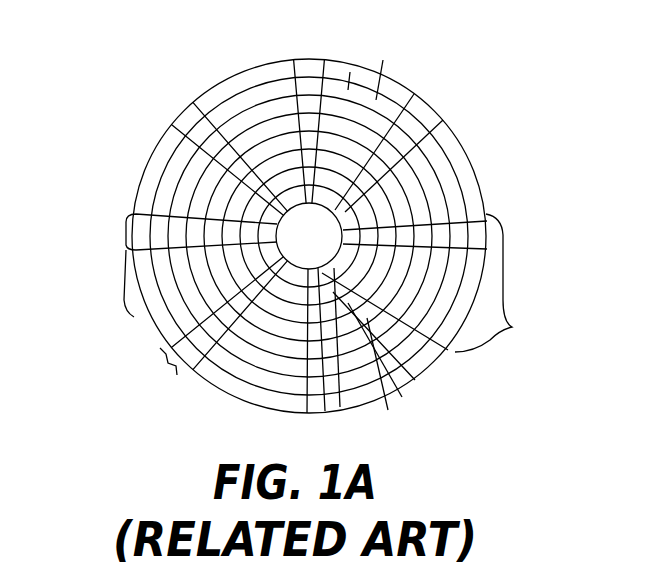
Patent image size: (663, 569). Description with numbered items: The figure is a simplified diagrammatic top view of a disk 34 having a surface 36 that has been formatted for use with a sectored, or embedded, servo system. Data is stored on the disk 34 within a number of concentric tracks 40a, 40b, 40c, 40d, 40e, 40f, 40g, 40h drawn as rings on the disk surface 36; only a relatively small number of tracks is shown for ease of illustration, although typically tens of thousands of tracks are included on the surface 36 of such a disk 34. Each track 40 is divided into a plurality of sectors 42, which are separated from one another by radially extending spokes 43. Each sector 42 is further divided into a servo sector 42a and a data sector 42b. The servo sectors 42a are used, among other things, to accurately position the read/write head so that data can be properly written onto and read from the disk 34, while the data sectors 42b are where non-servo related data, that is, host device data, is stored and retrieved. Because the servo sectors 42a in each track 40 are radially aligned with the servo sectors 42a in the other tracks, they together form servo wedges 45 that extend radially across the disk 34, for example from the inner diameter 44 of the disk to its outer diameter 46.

The disk 34 is at (227, 80).
The surface 36 is at (160, 150).
The track 40 is at (455, 178).
The track 40a is at (350, 72).
The track 40b is at (383, 60).
The track 40c is at (414, 94).
The track 40d is at (443, 120).
The track 40e is at (415, 380).
The track 40f is at (402, 397).
The track 40g is at (388, 410).
The track 40h is at (340, 410).
The sector 42 is at (498, 327).
The servo sector 42a is at (177, 375).
The data sector 42b is at (132, 310).
The spoke 43 is at (487, 217).
The inner diameter 44 is at (289, 247).
The servo wedge 45 is at (200, 212).
The outer diameter 46 is at (227, 392).